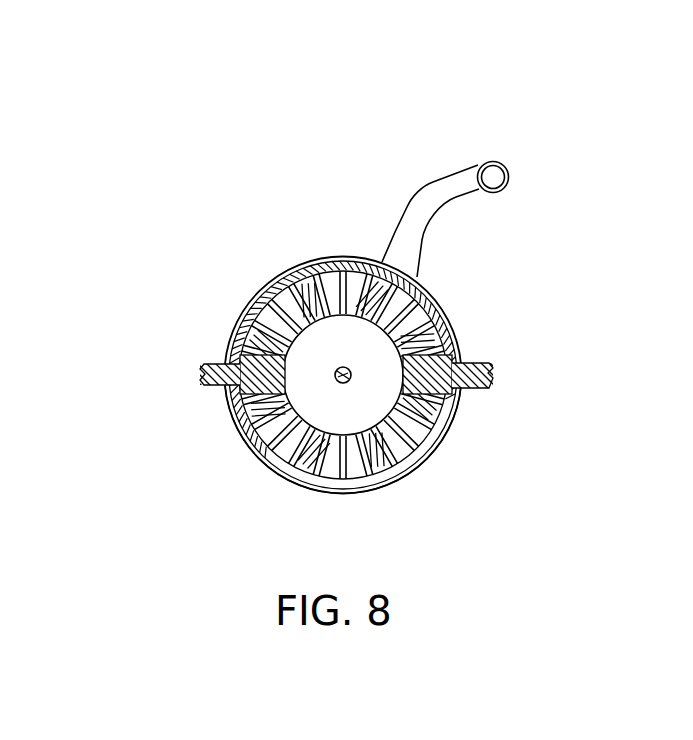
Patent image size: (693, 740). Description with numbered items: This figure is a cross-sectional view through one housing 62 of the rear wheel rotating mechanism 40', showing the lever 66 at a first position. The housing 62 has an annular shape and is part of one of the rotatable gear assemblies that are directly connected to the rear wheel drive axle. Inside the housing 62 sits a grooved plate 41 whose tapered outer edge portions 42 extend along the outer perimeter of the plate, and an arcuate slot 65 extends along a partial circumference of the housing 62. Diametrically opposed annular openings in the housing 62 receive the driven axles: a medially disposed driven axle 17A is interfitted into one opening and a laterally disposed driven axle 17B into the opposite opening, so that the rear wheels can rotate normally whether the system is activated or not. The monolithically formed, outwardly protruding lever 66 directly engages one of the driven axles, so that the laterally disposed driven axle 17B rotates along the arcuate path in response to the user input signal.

The rear wheel rotating mechanism 40' is at (342, 338).
The grooved plate 41 is at (335, 322).
The tapered outer edge portion 42 is at (274, 317).
The housing 62 is at (450, 442).
The arcuate slot 65 is at (303, 486).
The lever 66 is at (496, 177).
The medially disposed driven axle 17A is at (478, 366).
The laterally disposed driven axle 17B is at (212, 372).